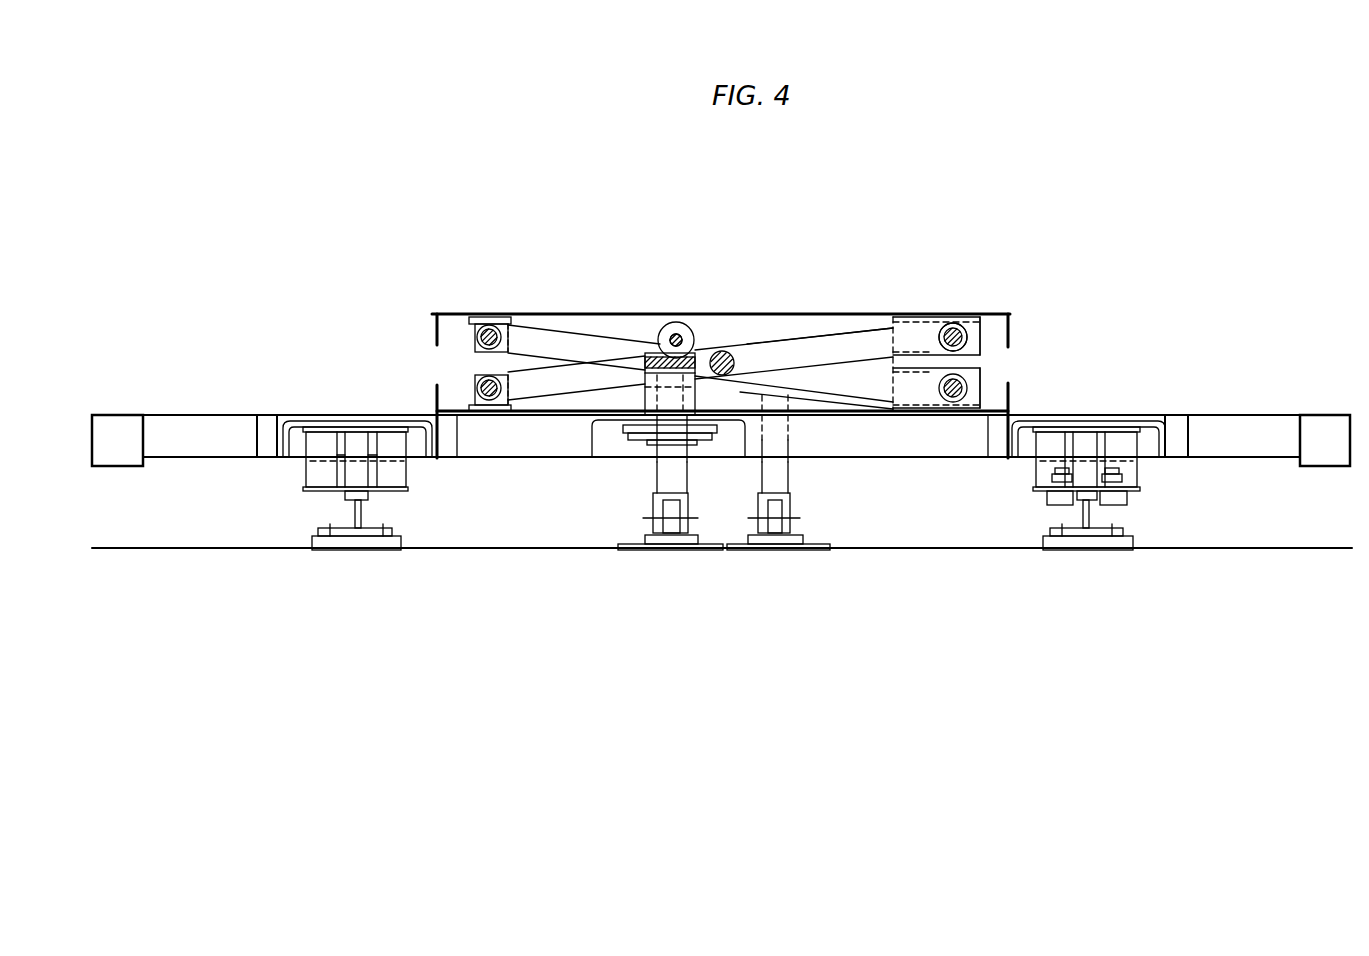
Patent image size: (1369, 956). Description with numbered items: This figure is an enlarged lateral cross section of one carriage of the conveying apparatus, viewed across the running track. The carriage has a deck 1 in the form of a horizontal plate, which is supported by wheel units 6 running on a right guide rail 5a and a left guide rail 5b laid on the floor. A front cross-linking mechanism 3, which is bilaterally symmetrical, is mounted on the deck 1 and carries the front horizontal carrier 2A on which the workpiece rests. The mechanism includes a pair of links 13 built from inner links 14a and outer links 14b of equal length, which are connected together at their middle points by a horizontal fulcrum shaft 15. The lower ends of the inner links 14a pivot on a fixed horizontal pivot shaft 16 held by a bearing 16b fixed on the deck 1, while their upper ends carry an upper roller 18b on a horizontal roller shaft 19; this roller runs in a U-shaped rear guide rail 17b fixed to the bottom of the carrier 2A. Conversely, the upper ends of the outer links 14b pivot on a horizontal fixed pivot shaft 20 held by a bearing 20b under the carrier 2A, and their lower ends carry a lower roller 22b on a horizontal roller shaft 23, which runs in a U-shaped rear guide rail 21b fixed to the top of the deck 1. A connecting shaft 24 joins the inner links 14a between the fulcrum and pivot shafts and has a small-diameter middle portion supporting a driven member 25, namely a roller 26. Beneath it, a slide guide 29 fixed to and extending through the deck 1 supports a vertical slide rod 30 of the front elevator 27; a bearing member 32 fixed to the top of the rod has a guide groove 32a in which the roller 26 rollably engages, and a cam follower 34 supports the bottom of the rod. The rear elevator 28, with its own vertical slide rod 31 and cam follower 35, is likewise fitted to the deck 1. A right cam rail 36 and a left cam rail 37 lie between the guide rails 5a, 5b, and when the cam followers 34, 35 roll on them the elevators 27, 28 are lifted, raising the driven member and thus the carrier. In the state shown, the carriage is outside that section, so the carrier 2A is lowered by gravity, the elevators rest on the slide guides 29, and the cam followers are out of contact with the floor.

The deck 1 is at (1240, 414).
The front horizontal carrier 2A is at (810, 318).
The front cross-linking mechanism 3 is at (846, 334).
The right guide rail 5a is at (347, 510).
The left guide rail 5b is at (1088, 515).
The wheel unit 6 is at (357, 444).
The pair of links 13 is at (565, 324).
The inner link 14a is at (866, 344).
The outer link 14b is at (880, 383).
The fulcrum shaft 15 is at (726, 352).
The fixed horizontal pivot shaft 16 is at (493, 413).
The bearing 16b is at (476, 374).
The rear guide rail 17b is at (979, 330).
The upper roller 18b is at (958, 324).
The horizontal roller shaft 19 is at (960, 321).
The horizontal fixed pivot shaft 20 is at (490, 324).
The bearing 20b is at (476, 334).
The rear guide rail 21b is at (981, 379).
The lower roller 22b is at (977, 384).
The horizontal roller shaft 23 is at (953, 402).
The connecting shaft 24 is at (682, 324).
The driven member 25 is at (676, 322).
The roller 26 is at (676, 340).
The front elevator 27 is at (693, 485).
The rear elevator 28 is at (808, 493).
The slide guide 29 is at (642, 380).
The vertical slide rod 30 is at (668, 474).
The vertical slide rod 31 is at (782, 475).
The bearing member 32 is at (645, 355).
The guide groove 32a is at (649, 352).
The cam follower 34 is at (653, 507).
The cam follower 35 is at (790, 510).
The right cam rail 36 is at (670, 546).
The left cam rail 37 is at (776, 546).